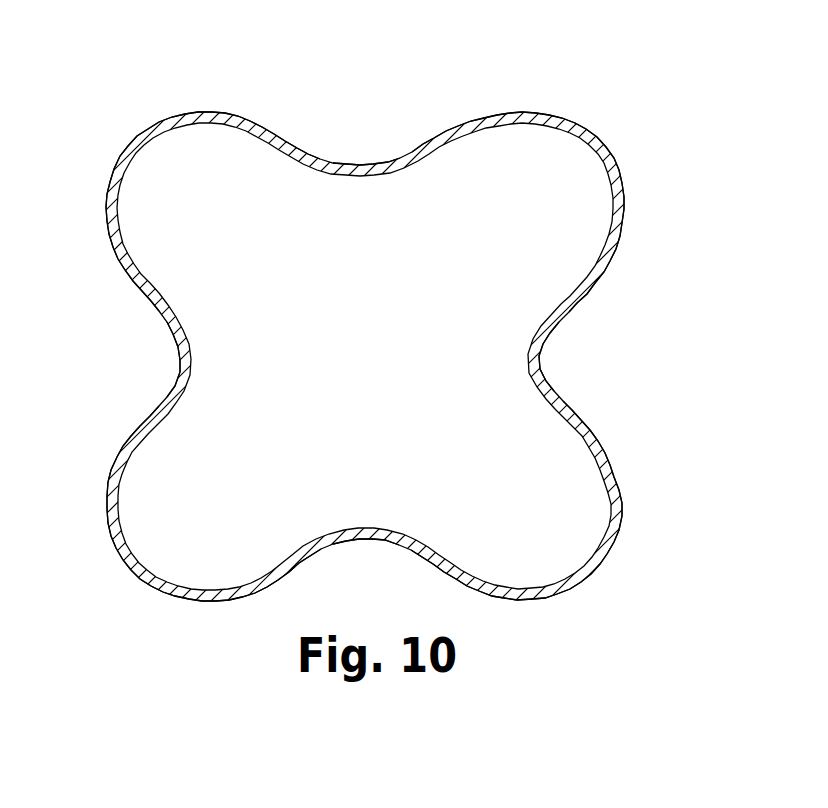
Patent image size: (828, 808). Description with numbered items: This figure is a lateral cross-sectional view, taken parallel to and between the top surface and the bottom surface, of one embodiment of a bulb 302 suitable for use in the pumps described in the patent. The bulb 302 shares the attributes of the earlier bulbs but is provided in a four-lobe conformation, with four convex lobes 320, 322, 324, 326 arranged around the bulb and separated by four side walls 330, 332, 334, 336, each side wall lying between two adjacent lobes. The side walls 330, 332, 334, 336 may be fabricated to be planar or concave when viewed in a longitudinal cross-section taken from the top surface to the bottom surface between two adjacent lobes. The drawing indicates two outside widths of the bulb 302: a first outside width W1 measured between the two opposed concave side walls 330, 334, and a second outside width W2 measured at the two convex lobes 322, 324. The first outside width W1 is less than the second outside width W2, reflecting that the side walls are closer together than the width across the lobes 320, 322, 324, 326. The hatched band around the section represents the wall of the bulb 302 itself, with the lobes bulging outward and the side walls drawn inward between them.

The bulb 302 is at (638, 145).
The lobe 320 is at (593, 563).
The lobe 322 is at (130, 570).
The lobe 324 is at (150, 133).
The lobe 326 is at (577, 131).
The side wall 330 is at (373, 548).
The side wall 332 is at (180, 357).
The side wall 334 is at (373, 168).
The side wall 336 is at (539, 357).
The first outside width W1 is at (360, 590).
The second outside width W2 is at (205, 657).